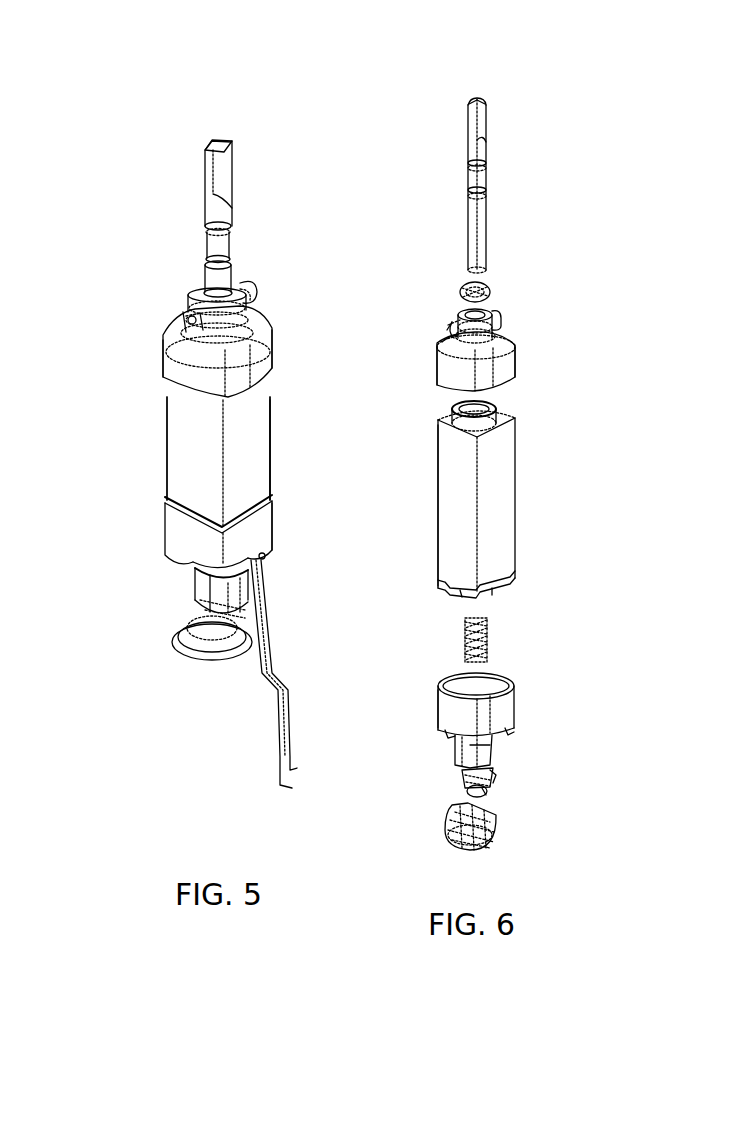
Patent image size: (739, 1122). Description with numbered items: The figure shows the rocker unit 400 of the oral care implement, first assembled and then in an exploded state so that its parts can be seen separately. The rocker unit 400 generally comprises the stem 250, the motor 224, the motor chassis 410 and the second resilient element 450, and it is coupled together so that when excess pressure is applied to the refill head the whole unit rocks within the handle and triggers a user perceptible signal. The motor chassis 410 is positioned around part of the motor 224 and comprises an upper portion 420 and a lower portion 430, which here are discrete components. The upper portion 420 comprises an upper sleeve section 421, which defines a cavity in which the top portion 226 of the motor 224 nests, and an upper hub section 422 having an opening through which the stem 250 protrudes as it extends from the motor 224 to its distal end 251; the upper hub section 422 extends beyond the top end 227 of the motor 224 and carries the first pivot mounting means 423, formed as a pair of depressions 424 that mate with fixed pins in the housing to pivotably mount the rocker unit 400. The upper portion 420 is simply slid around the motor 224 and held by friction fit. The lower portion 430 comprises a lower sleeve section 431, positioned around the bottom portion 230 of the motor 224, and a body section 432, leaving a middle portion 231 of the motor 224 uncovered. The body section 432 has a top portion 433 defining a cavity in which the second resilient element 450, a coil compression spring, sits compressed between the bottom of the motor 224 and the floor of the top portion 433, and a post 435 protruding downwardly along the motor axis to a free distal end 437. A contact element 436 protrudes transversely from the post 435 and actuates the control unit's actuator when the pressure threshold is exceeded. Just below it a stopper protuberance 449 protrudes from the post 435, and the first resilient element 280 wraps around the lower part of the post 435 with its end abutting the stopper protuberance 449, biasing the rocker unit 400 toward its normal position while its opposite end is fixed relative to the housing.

In FIG. 5, the rocker unit 400 is at (110, 329).
In FIG. 6, the rocker unit 400 is at (405, 187).
In FIG. 5, the stem 250 is at (212, 200).
In FIG. 6, the stem 250 is at (476, 157).
In FIG. 5, the distal end 251 is at (219, 144).
In FIG. 6, the distal end 251 is at (473, 103).
In FIG. 5, the motor chassis 410 is at (165, 532).
In FIG. 5, the upper portion 420 is at (170, 340).
In FIG. 6, the upper portion 420 is at (508, 343).
In FIG. 5, the upper sleeve section 421 is at (262, 362).
In FIG. 6, the upper sleeve section 421 is at (507, 368).
In FIG. 5, the upper hub section 422 is at (240, 290).
In FIG. 6, the upper hub section 422 is at (487, 327).
In FIG. 6, the first pivot mounting means 423 is at (439, 324).
In FIG. 5, the depressions 424 is at (190, 320).
In FIG. 6, the depressions 424 is at (455, 328).
In FIG. 6, the top end 227 is at (452, 340).
In FIG. 5, the motor 224 is at (248, 427).
In FIG. 6, the motor 224 is at (498, 512).
In FIG. 6, the top portion 226 is at (502, 455).
In FIG. 6, the bottom portion 230 is at (497, 555).
In FIG. 5, the middle portion 231 is at (248, 457).
In FIG. 6, the middle portion 231 is at (455, 498).
In FIG. 5, the lower portion 430 is at (185, 540).
In FIG. 6, the lower portion 430 is at (502, 707).
In FIG. 5, the lower sleeve section 431 is at (260, 530).
In FIG. 6, the lower sleeve section 431 is at (455, 715).
In FIG. 5, the body section 432 is at (193, 585).
In FIG. 6, the body section 432 is at (472, 748).
In FIG. 6, the top portion 433 is at (477, 755).
In FIG. 6, the post 435 is at (466, 790).
In FIG. 6, the contact element 436 is at (492, 785).
In FIG. 6, the free distal end 437 is at (485, 800).
In FIG. 6, the stopper protuberance 449 is at (467, 773).
In FIG. 6, the second resilient element 450 is at (488, 643).
In FIG. 5, the first resilient element 280 is at (177, 647).
In FIG. 6, the first resilient element 280 is at (490, 835).